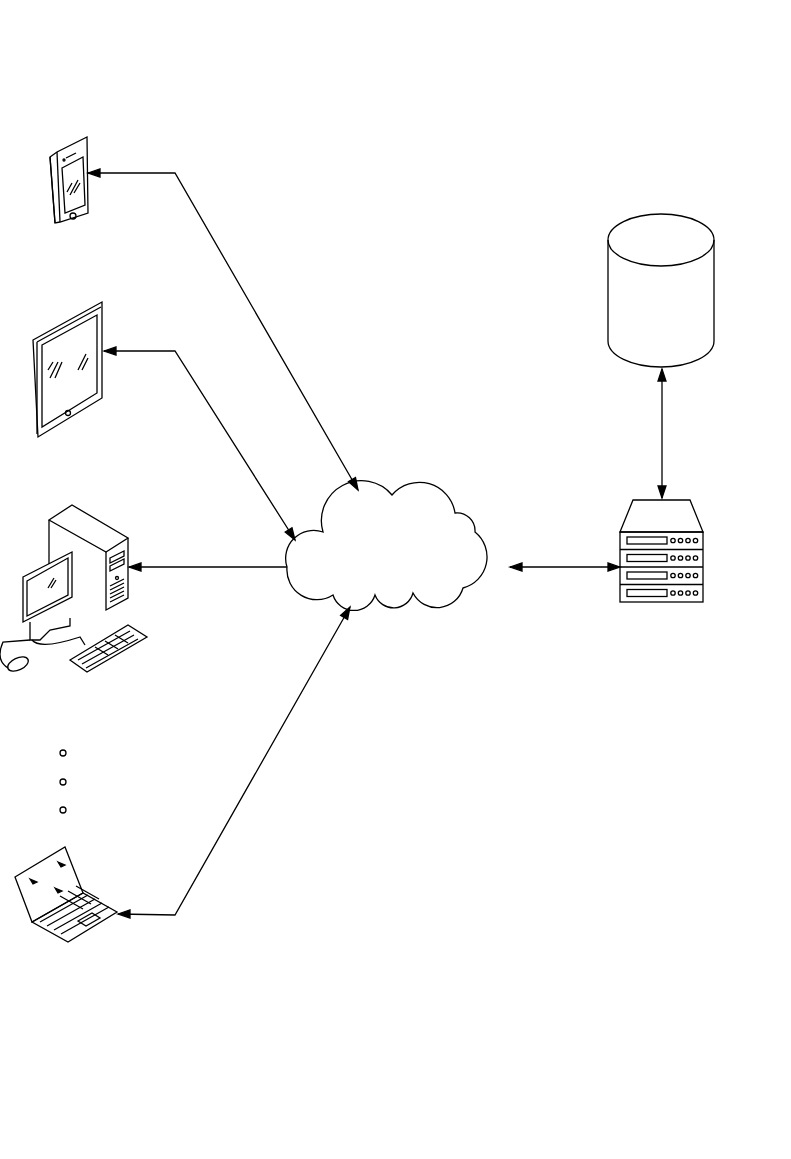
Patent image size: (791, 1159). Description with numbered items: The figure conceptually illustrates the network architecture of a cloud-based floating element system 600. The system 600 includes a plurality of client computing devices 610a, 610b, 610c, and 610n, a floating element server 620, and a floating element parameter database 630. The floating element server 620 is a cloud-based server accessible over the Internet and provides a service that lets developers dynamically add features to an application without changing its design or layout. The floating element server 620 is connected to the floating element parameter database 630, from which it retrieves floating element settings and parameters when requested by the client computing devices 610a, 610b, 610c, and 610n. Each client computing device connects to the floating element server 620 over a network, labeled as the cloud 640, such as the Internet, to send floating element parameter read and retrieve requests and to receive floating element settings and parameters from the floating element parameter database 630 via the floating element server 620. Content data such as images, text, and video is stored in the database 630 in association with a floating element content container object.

The cloud-based floating element system 600 is at (138, 38).
The client computing device 610a is at (90, 165).
The client computing device 610b is at (105, 338).
The client computing device 610c is at (112, 526).
The client computing device 610n is at (80, 876).
The floating element server 620 is at (614, 584).
The floating element parameter database 630 is at (606, 322).
The cloud 640 is at (418, 577).